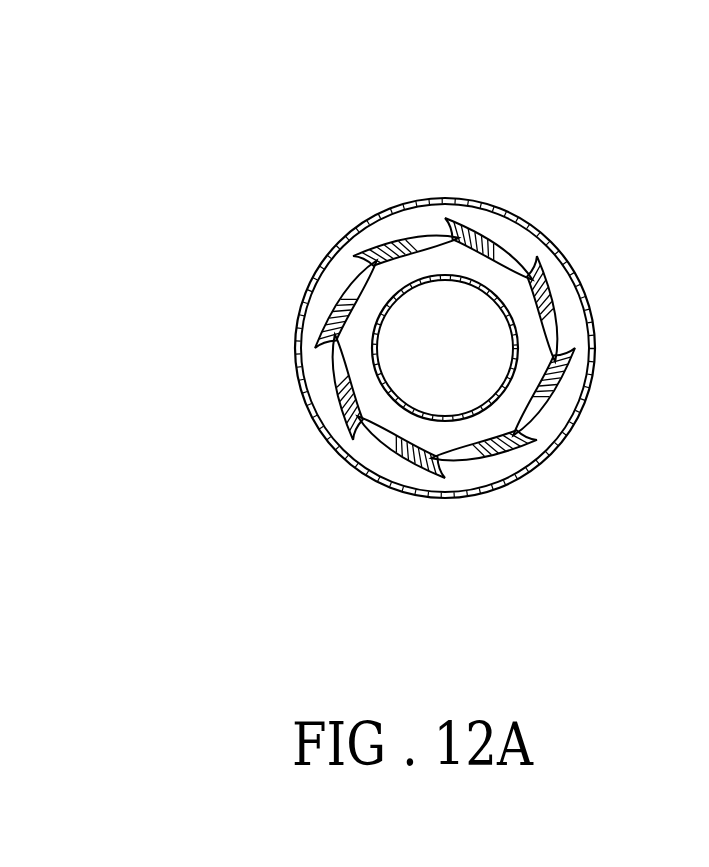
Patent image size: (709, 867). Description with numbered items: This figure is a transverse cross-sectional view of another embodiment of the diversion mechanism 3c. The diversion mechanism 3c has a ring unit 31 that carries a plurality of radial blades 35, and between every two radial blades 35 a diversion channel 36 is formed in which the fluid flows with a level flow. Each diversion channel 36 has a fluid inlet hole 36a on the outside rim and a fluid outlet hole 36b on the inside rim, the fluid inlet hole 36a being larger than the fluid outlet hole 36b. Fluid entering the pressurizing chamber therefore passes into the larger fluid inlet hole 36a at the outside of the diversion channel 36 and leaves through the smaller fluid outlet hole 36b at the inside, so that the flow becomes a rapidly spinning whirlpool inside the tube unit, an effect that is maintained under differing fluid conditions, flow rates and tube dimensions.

The diversion mechanism 3c is at (468, 195).
The ring unit 31 is at (594, 380).
The radial blades 35 is at (560, 332).
The diversion channel 36 is at (328, 320).
The fluid inlet hole 36a is at (380, 459).
The fluid outlet hole 36b is at (355, 345).